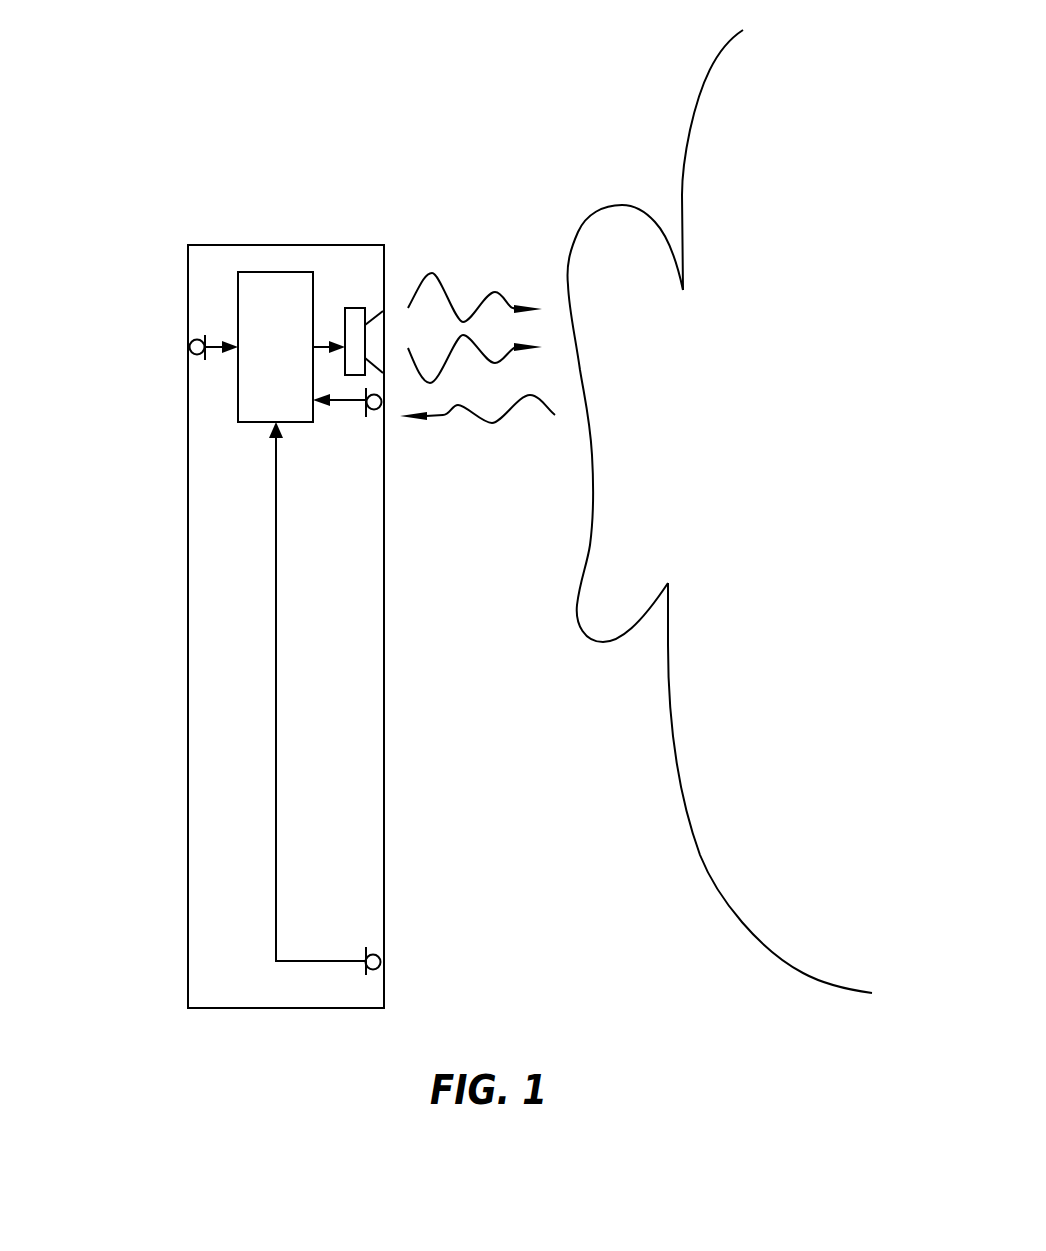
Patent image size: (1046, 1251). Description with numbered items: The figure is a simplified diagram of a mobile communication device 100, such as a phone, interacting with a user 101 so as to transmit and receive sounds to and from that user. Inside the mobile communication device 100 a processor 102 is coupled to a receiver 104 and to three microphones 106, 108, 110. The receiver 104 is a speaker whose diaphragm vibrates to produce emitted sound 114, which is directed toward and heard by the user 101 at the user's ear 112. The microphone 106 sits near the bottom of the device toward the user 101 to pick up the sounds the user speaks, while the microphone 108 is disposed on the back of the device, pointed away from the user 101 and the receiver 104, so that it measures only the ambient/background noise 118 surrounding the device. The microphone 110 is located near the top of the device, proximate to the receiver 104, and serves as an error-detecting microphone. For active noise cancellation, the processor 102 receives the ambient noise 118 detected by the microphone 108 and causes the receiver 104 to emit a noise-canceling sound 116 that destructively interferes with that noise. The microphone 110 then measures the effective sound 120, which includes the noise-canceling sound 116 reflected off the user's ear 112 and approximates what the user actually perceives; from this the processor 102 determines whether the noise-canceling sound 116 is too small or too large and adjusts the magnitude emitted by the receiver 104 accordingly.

The mobile communication device 100 is at (252, 986).
The user 101 is at (783, 241).
The processor 102 is at (295, 360).
The receiver 104 is at (353, 317).
The microphone 106 is at (380, 957).
The microphone 108 is at (192, 350).
The microphone 110 is at (381, 409).
The user's ear 112 is at (688, 487).
The emitted sound 114 is at (490, 290).
The noise-canceling sound 116 is at (500, 361).
The ambient/background noise 118 is at (218, 626).
The effective sound 120 is at (500, 422).